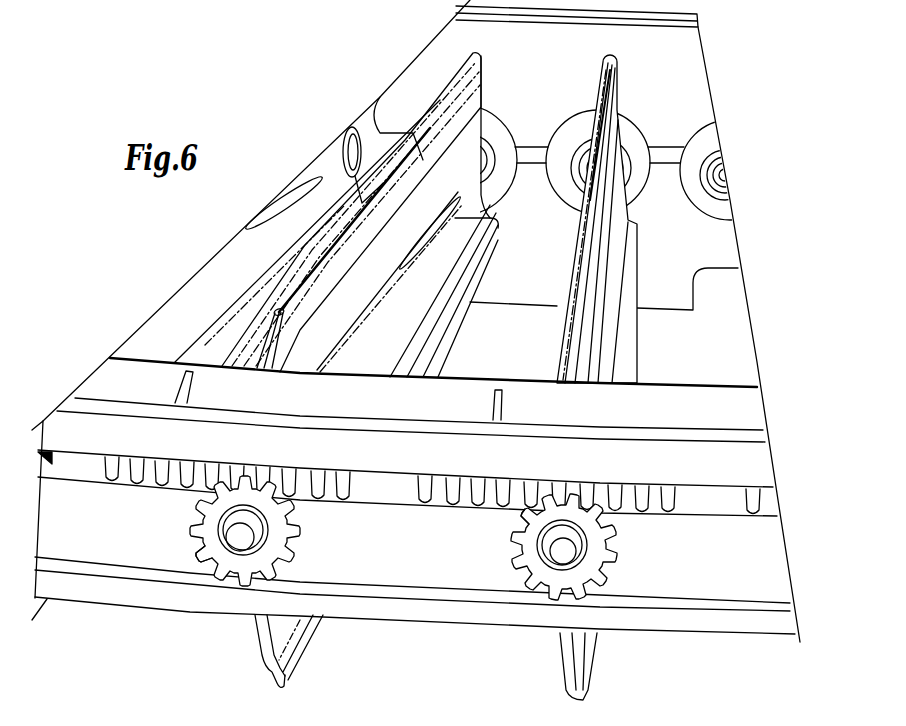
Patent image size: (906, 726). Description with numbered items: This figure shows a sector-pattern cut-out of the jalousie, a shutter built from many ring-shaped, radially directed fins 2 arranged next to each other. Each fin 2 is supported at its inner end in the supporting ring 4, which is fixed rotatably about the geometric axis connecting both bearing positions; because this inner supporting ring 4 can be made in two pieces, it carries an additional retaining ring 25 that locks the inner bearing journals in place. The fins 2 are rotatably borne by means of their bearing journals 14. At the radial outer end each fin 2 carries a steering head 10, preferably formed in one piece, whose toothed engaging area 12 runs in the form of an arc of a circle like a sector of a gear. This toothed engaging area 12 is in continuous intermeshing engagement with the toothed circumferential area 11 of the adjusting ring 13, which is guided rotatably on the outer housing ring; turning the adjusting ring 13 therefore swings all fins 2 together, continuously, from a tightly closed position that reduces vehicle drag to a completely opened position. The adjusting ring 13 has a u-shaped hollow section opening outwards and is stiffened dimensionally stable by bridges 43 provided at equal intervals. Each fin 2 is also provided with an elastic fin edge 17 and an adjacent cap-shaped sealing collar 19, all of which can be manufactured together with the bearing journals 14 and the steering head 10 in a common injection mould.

The fin 2 is at (418, 157).
The supporting ring 4 is at (715, 238).
The steering head 10 is at (278, 537).
The toothed circumferential area 11 is at (133, 473).
The toothed engaging area 12 is at (218, 580).
The adjusting ring 13 is at (90, 430).
The bearing journal 14 is at (560, 563).
The elastic fin edge 17 is at (338, 240).
The sealing collar 19 is at (571, 135).
The retaining ring 25 is at (683, 67).
The bridge 43 is at (185, 387).